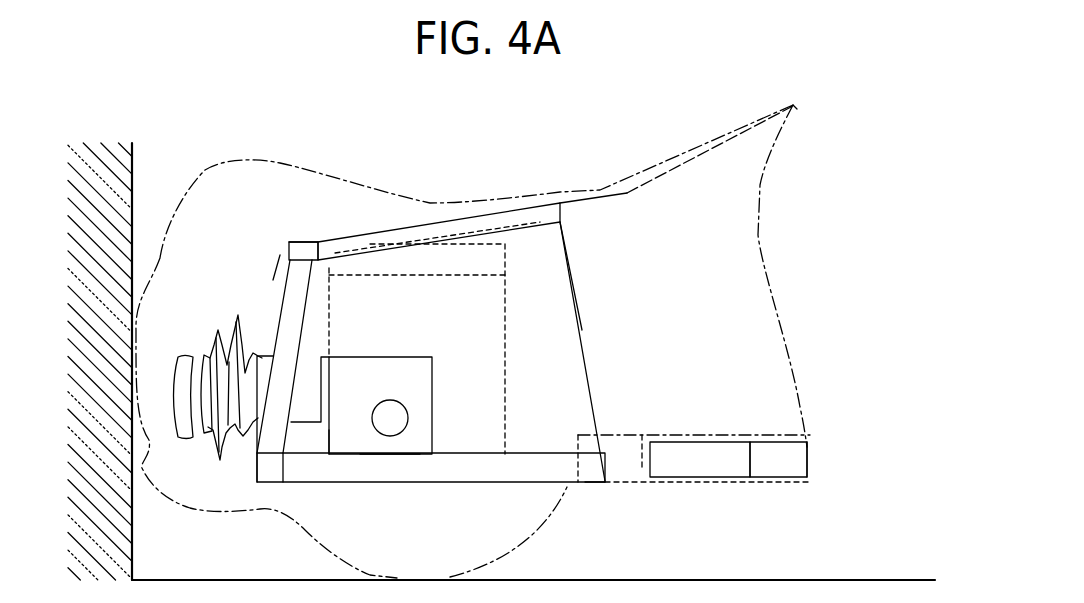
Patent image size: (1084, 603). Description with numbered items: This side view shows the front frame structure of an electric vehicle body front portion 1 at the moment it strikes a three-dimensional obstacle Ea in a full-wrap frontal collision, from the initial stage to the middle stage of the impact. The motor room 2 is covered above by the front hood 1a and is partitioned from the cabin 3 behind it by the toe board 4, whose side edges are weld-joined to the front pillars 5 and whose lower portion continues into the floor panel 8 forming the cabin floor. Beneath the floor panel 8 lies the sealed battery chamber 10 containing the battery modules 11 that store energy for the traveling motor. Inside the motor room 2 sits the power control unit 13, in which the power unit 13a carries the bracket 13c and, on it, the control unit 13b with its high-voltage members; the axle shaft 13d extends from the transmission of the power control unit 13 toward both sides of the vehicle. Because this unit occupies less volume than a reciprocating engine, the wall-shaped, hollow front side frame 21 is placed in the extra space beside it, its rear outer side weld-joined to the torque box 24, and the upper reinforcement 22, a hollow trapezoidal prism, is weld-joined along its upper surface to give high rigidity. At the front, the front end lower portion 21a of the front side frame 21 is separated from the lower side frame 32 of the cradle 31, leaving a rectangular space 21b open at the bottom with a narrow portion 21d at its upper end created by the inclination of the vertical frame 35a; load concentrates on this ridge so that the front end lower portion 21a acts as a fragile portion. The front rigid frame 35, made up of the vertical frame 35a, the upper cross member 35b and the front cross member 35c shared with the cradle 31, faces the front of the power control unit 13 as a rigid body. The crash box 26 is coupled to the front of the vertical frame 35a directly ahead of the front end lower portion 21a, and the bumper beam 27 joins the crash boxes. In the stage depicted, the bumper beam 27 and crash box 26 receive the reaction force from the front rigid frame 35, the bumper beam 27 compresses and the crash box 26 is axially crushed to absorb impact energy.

The three-dimensional obstacle Ea is at (133, 176).
The vehicle body front portion 1 is at (596, 142).
The front hood 1a is at (342, 172).
The motor room 2 is at (477, 432).
The cabin 3 is at (664, 342).
The toe board 4 is at (575, 278).
The front pillar 5 is at (723, 144).
The floor panel 8 is at (705, 435).
The battery chamber 10 is at (788, 434).
The battery module 11 is at (688, 478).
The power control unit 13 is at (467, 343).
The power unit 13a is at (505, 383).
The control unit 13b is at (457, 217).
The bracket 13c is at (428, 288).
The axle shaft 13d is at (391, 436).
The front side frame 21 is at (460, 387).
The front end lower portion 21a is at (303, 407).
The space 21b is at (403, 393).
The narrow portion 21d is at (313, 360).
The upper reinforcement 22 is at (535, 202).
The torque box 24 is at (625, 483).
The crash box 26 is at (219, 324).
The bumper beam 27 is at (190, 428).
The cradle 31 is at (567, 487).
The lower side frame 32 is at (468, 483).
The front rigid frame 35 is at (266, 371).
The vertical frame 35a is at (268, 266).
The upper cross member 35b is at (296, 242).
The front cross member 35c is at (271, 468).